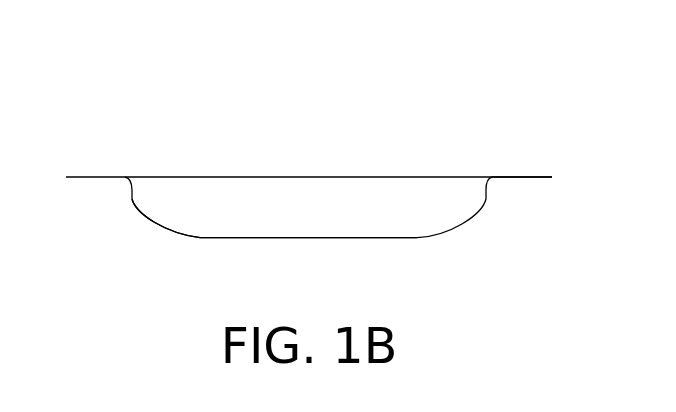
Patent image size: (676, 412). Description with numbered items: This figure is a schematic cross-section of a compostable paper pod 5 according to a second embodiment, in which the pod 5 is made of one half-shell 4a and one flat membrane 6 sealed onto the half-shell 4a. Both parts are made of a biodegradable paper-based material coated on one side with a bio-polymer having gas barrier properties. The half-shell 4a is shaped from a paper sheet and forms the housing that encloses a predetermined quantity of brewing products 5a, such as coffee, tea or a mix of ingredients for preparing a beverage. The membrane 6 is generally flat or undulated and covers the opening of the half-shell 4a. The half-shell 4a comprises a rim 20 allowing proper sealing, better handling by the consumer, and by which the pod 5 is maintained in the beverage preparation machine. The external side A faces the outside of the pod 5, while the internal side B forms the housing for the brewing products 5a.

The pod 5 is at (489, 106).
The flat membrane 6 is at (94, 177).
The rim 20 is at (526, 177).
The brewing products 5a is at (183, 211).
The half-shell 4a is at (232, 238).
The external side A is at (305, 177).
The internal side B is at (318, 178).